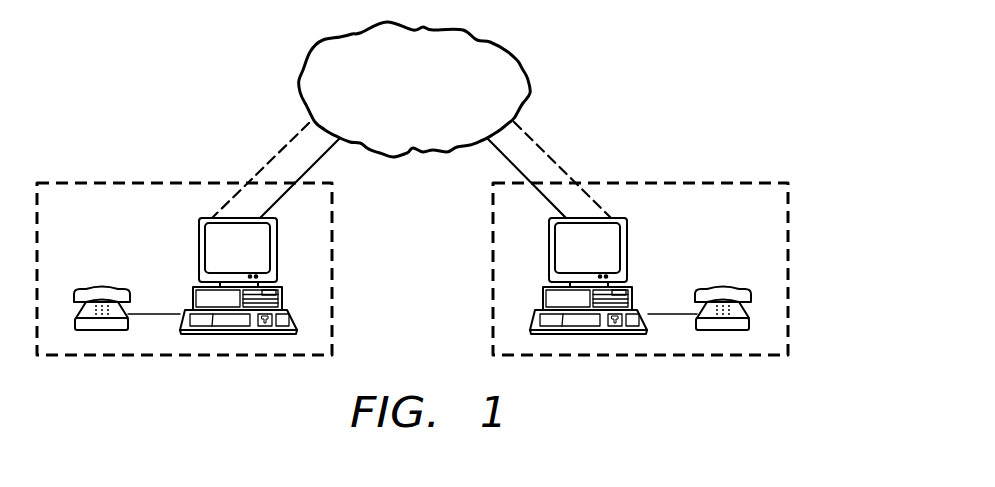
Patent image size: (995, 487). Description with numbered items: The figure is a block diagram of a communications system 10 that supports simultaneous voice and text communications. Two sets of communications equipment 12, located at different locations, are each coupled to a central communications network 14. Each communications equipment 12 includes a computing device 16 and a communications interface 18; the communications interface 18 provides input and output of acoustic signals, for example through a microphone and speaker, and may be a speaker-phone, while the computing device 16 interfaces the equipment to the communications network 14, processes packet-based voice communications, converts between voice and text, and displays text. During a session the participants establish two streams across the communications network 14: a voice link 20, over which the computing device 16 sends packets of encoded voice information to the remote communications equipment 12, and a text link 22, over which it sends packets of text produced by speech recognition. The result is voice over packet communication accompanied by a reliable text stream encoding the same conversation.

The communications system 10 is at (652, 54).
The communications equipment 12 is at (171, 183).
The communications network 14 is at (300, 90).
The computing device 16 is at (200, 260).
The communications interface 18 is at (100, 290).
The voice link 20 is at (329, 160).
The text link 22 is at (281, 153).